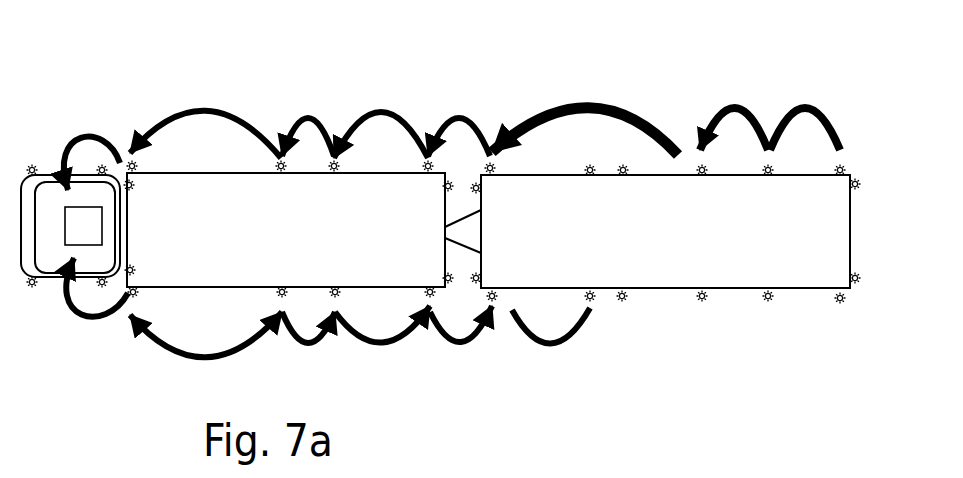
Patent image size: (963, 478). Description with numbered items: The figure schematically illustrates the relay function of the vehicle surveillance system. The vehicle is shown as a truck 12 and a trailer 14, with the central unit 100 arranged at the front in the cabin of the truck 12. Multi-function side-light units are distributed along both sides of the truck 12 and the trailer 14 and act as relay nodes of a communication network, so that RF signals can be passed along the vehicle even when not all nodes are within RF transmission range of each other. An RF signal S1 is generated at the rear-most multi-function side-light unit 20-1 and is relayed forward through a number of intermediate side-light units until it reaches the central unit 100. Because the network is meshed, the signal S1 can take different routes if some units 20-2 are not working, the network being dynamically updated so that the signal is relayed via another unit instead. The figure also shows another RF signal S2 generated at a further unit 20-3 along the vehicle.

The central unit 100 is at (88, 223).
The truck 12 is at (286, 250).
The trailer 14 is at (689, 243).
The rear-most multi-function side-light unit 20-1 is at (835, 163).
The non-working multi-function side-light units 20-2 is at (620, 167).
The multi-function side-light unit 20-3 is at (592, 308).
The RF signal S1 is at (773, 122).
The RF signal S2 is at (548, 343).